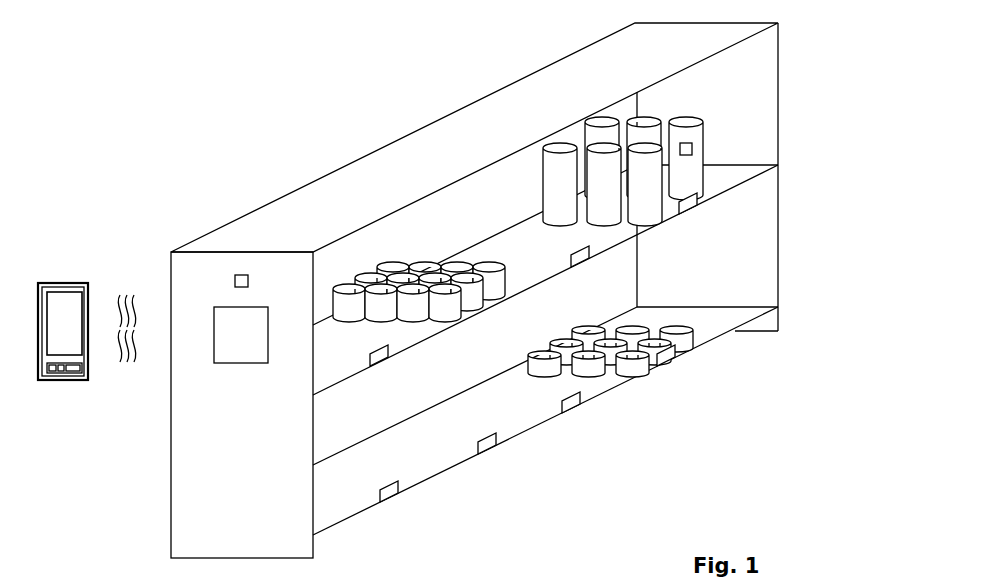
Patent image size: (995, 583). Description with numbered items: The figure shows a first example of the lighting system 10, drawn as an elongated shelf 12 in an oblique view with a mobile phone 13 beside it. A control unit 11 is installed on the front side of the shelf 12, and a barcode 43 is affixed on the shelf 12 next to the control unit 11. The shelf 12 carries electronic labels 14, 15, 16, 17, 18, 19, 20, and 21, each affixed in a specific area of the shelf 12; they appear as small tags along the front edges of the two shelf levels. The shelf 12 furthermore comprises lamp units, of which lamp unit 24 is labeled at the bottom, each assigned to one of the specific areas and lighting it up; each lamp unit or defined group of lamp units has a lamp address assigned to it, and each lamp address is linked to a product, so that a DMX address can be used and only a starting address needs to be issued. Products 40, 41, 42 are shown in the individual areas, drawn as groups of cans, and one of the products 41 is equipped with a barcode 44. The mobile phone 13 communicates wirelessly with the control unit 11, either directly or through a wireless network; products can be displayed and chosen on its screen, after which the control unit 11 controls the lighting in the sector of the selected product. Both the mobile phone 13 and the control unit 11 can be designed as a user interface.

The lighting system 10 is at (128, 77).
The control unit 11 is at (213, 350).
The shelf 12 is at (778, 67).
The mobile phone 13 is at (63, 283).
The electronic label 14 is at (370, 345).
The electronic label 15 is at (475, 292).
The electronic label 16 is at (570, 245).
The electronic label 17 is at (708, 207).
The electronic label 18 is at (403, 502).
The electronic label 19 is at (505, 453).
The electronic label 20 is at (583, 412).
The electronic label 21 is at (677, 368).
The lamp unit 24 is at (421, 579).
The product 40 is at (388, 207).
The product 41 is at (713, 173).
The product 42 is at (673, 318).
The barcode 43 is at (233, 278).
The barcode 44 is at (697, 147).